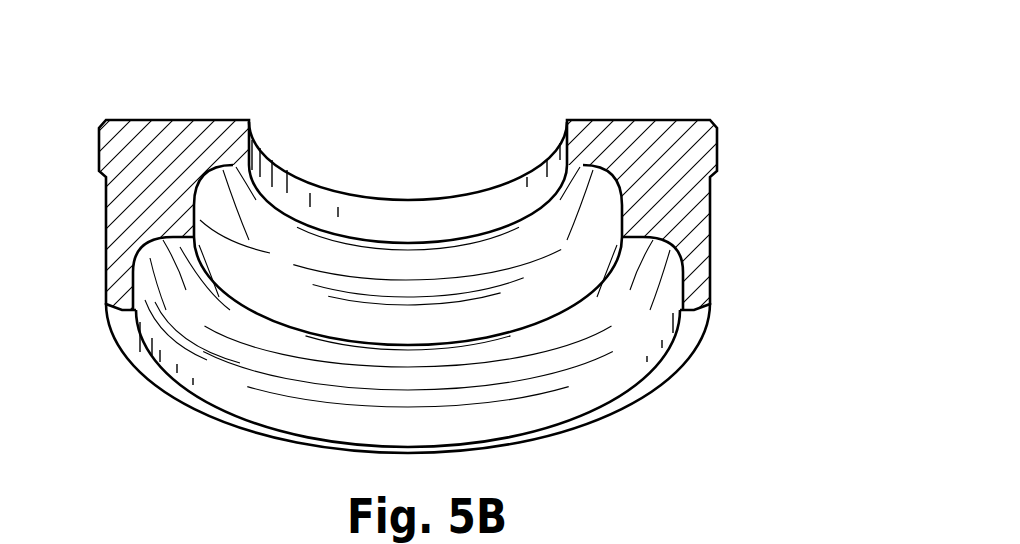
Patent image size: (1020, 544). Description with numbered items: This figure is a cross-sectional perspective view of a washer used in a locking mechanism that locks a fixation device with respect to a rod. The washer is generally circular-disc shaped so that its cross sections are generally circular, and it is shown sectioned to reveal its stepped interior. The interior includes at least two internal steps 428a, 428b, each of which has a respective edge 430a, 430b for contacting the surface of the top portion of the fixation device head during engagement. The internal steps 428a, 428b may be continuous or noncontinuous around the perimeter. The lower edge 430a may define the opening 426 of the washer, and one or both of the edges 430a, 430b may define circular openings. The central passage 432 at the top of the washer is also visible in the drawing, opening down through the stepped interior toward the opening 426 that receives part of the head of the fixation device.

The opening 426 is at (550, 410).
The internal step 428a is at (682, 283).
The internal step 428b is at (622, 207).
The edge 430a is at (684, 340).
The edge 430b is at (622, 236).
The central opening 432 is at (457, 150).